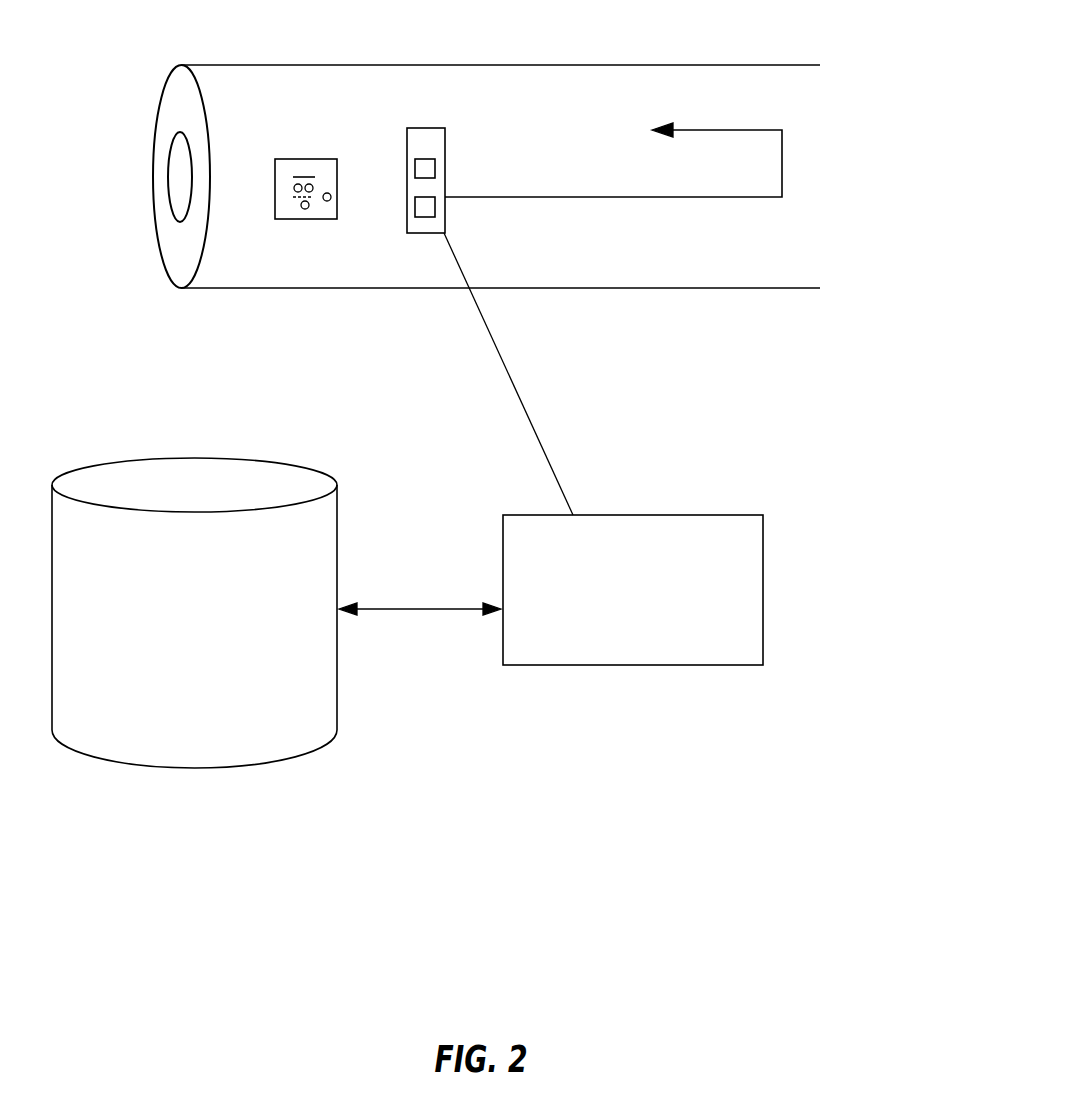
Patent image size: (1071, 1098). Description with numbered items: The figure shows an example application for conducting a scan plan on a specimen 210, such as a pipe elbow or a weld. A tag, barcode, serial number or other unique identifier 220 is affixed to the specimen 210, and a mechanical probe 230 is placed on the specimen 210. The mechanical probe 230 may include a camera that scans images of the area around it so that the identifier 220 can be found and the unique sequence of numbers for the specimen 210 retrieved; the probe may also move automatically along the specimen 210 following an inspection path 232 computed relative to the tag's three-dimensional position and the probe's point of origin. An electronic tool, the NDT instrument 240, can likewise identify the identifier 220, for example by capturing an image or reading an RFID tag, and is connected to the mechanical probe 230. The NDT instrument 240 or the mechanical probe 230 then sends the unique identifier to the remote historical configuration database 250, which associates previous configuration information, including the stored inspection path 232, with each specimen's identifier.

The specimen 210 is at (300, 65).
The identifier 220 is at (283, 158).
The mechanical probe 230 is at (432, 132).
The inspection path 232 is at (503, 197).
The NDT instrument 240 is at (672, 515).
The historical configuration database 250 is at (182, 458).